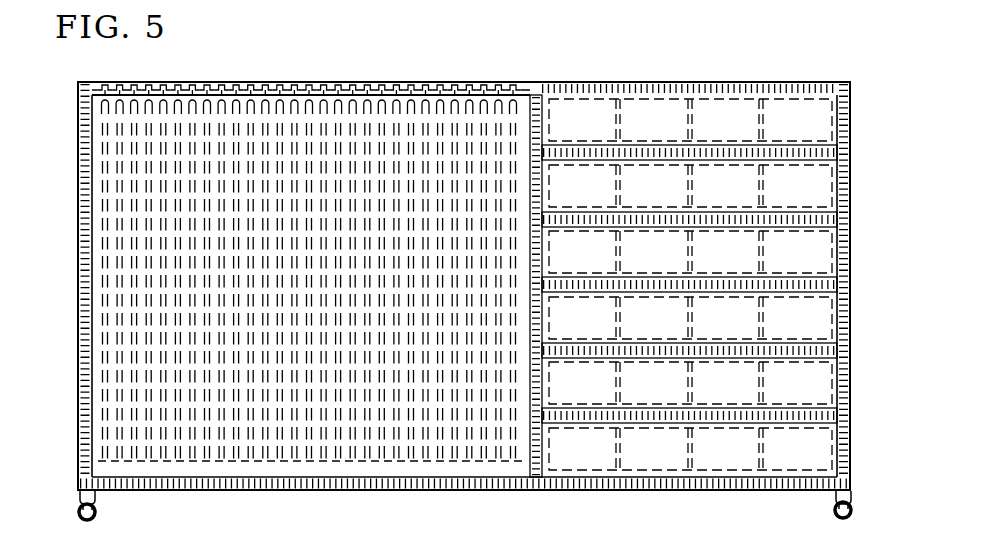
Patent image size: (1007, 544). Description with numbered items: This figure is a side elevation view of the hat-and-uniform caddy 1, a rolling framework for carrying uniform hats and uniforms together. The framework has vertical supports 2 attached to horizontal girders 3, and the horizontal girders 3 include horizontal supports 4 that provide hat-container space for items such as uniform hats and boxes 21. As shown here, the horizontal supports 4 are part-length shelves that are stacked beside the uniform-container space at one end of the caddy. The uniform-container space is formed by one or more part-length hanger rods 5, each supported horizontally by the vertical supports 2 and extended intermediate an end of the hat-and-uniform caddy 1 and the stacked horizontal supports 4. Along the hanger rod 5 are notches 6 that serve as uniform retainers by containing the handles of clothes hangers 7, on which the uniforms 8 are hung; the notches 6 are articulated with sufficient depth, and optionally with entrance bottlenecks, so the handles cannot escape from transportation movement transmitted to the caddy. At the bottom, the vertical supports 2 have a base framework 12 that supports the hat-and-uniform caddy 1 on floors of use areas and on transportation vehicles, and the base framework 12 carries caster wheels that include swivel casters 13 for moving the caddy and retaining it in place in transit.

The hat-and-uniform caddy 1 is at (777, 32).
The vertical supports 2 is at (90, 217).
The horizontal girders 3 is at (772, 283).
The horizontal supports 4 is at (798, 343).
The hanger rod 5 is at (270, 90).
The notches 6 is at (293, 89).
The clothes hangers 7 is at (334, 100).
The uniforms 8 is at (128, 300).
The base framework 12 is at (113, 497).
The swivel casters 13 is at (80, 508).
The boxes 21 is at (618, 232).